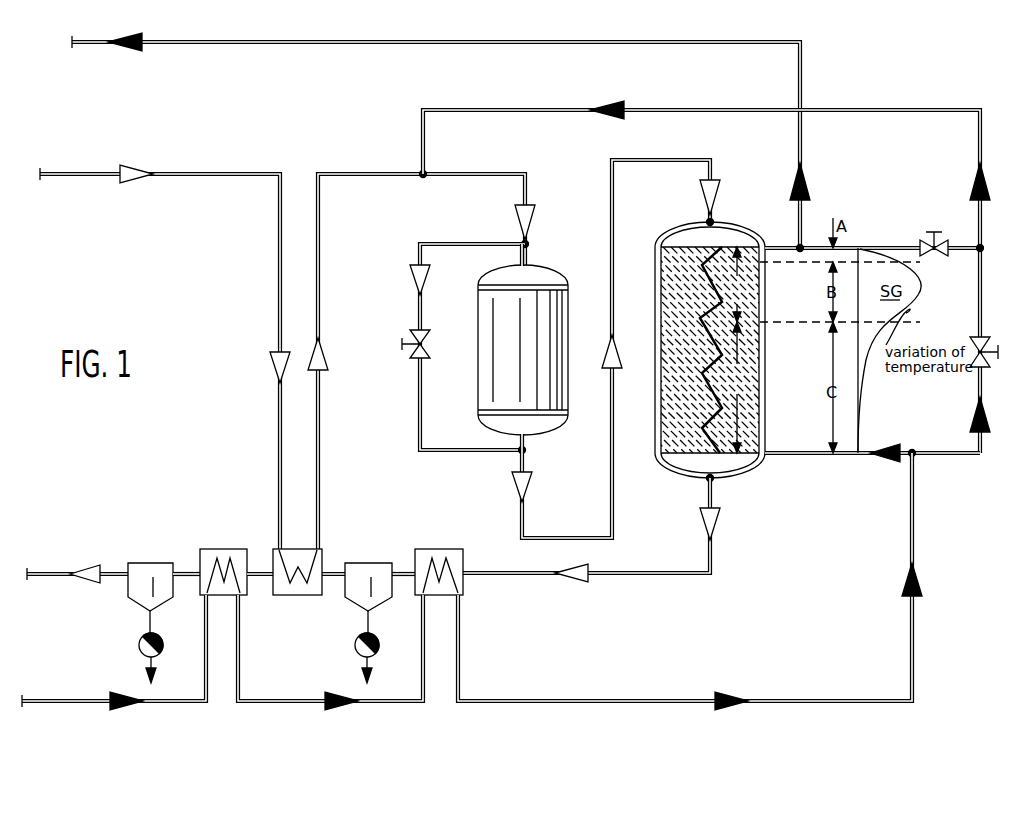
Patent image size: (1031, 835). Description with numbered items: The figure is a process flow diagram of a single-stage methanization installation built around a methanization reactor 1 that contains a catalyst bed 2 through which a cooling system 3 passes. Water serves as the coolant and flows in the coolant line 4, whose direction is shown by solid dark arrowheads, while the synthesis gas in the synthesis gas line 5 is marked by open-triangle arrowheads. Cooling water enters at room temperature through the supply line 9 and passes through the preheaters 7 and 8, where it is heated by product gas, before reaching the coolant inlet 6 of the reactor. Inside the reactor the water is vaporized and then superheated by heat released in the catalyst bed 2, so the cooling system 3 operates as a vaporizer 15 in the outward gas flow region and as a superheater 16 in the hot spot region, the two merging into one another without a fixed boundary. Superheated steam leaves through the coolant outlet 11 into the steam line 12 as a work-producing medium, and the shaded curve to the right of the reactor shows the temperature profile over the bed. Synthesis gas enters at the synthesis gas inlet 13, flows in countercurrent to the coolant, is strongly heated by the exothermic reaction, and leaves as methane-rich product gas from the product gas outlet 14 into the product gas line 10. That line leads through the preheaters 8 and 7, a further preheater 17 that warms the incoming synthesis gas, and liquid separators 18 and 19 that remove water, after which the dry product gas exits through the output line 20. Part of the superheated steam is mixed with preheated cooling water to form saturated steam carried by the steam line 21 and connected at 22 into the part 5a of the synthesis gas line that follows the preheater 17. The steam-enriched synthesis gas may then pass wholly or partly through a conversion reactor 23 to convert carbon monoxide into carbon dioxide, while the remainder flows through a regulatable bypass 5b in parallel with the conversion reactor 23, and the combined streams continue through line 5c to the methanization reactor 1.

The methanization reactor 1 is at (714, 350).
The catalyst bed 2 is at (686, 395).
The cooling system 3 is at (700, 320).
The coolant line 4 is at (275, 699).
The synthesis gas line 5 is at (280, 228).
The part of the synthesis gas line following the preheater 5a is at (320, 222).
The regulatable bypass 5b is at (418, 322).
The synthesis gas feed line to reactor 5c is at (652, 160).
The coolant inlet 6 is at (778, 452).
The preheater 7 is at (218, 560).
The preheater 8 is at (432, 556).
The supply line 9 is at (80, 698).
The product gas line 10 is at (488, 573).
The coolant outlet 11 is at (764, 246).
The steam line 12 is at (254, 43).
The synthesis gas inlet 13 is at (716, 222).
The product gas outlet 14 is at (706, 480).
The vaporizer 15 is at (767, 340).
The superheater 16 is at (738, 284).
The preheater 17 is at (290, 553).
The liquid separator 18 is at (358, 568).
The liquid separator 19 is at (145, 568).
The output line 20 is at (55, 576).
The steam line 21 is at (478, 110).
The connection point 22 is at (423, 172).
The conversion reactor 23 is at (500, 395).